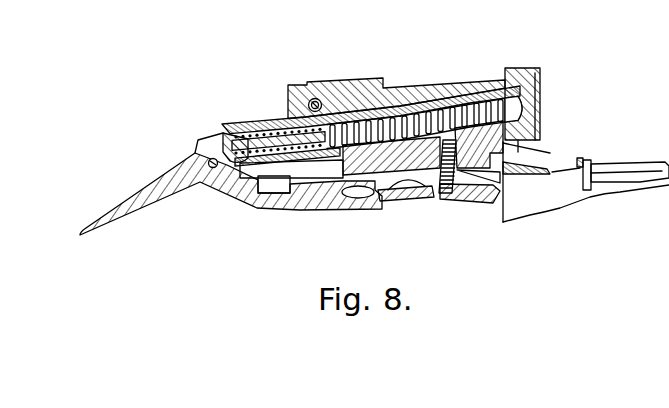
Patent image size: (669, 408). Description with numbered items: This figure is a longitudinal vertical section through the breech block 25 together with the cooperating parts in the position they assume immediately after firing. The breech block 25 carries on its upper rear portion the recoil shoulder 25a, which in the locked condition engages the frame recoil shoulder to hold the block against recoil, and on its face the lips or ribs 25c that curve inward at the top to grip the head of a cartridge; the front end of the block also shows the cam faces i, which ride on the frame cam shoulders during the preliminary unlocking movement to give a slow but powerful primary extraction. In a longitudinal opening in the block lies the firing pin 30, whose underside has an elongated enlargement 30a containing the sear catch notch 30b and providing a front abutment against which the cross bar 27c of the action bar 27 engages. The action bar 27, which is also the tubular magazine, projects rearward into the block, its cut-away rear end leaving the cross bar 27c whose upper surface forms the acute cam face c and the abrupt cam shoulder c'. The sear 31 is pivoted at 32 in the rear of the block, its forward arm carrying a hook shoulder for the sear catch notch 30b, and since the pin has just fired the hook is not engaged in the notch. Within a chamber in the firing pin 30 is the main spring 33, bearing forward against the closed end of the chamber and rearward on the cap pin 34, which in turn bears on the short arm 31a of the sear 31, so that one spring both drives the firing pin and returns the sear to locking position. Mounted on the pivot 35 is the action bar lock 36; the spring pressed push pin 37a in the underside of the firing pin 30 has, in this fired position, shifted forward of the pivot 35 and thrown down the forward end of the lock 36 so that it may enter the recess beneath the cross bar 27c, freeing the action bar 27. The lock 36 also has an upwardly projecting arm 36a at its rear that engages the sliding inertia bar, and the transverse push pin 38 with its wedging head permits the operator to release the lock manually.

The breech block 25 is at (370, 82).
The recoil shoulder 25a is at (503, 74).
The lips or ribs 25c is at (541, 106).
The action bar 27 is at (602, 183).
The cross bar 27c is at (515, 165).
The firing pin 30 is at (452, 100).
The elongated enlargement 30a is at (370, 176).
The sear catch notch 30b is at (430, 200).
The sear 31 is at (230, 188).
The short arm of the sear 31a is at (218, 150).
The sear pivot 32 is at (208, 162).
The main spring 33 is at (360, 100).
The cap pin 34 is at (258, 140).
The pivot 35 is at (417, 199).
The action bar lock 36 is at (467, 190).
The upwardly projecting arm 36a is at (393, 150).
The spring pressed push pin 37a is at (466, 204).
The transverse push pin 38 is at (320, 99).
The cam face c is at (552, 156).
The abrupt cam shoulder c' is at (578, 156).
The cam faces i is at (545, 135).